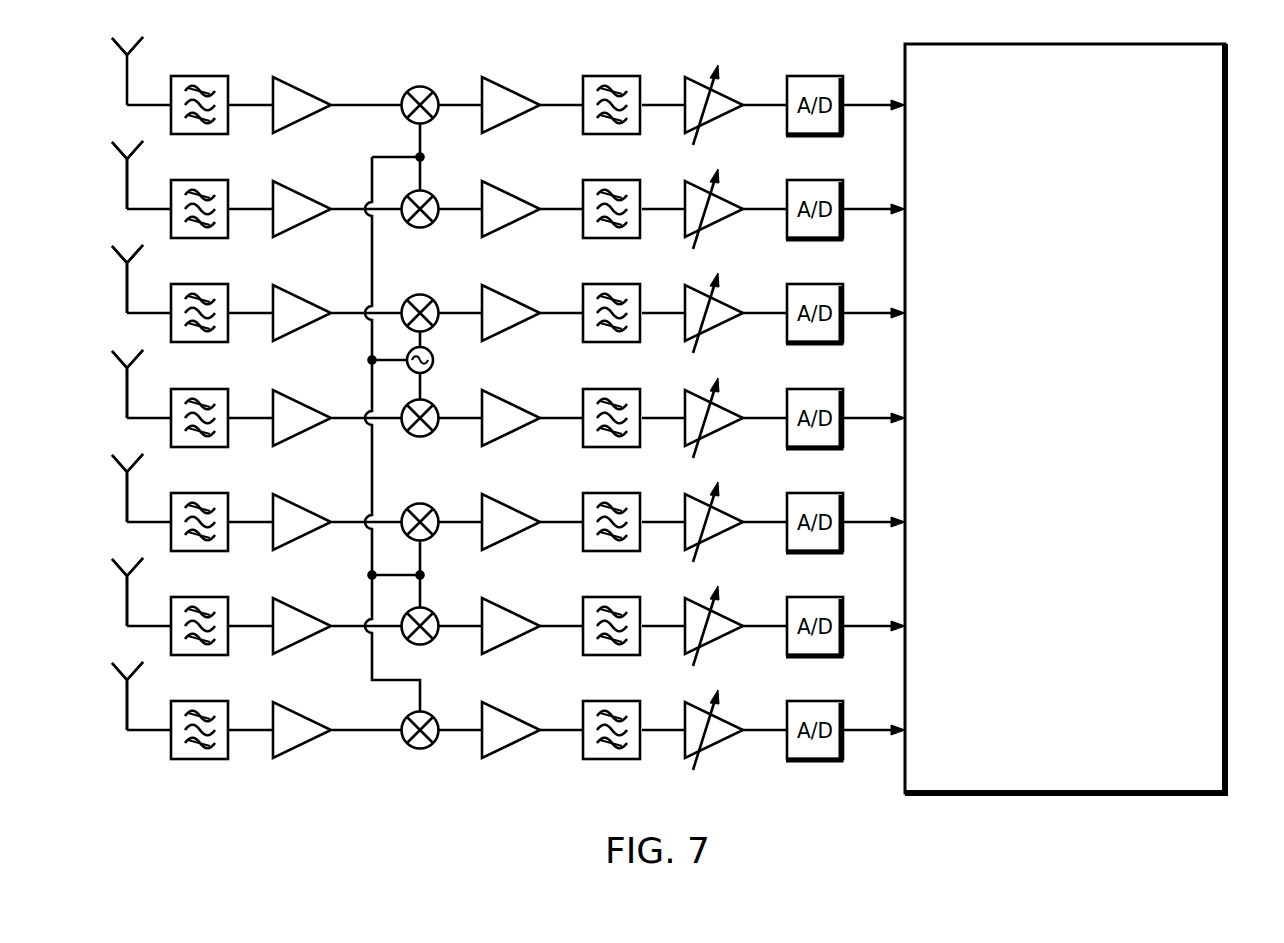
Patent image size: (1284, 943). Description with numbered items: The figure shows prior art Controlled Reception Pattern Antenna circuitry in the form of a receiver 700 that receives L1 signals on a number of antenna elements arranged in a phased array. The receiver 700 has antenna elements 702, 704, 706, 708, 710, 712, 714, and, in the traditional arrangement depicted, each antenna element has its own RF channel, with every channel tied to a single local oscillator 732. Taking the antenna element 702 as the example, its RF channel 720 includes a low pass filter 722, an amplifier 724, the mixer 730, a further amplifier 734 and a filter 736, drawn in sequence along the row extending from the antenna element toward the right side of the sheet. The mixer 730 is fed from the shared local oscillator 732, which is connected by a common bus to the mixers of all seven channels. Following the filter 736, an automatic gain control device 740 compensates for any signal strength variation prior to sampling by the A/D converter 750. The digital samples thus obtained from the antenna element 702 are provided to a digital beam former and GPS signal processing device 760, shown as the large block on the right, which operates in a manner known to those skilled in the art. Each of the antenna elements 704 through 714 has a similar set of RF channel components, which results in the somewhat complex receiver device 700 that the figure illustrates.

The receiver 700 is at (870, 826).
The antenna element 702 is at (114, 48).
The antenna element 704 is at (114, 152).
The antenna element 706 is at (114, 256).
The antenna element 708 is at (114, 361).
The antenna element 710 is at (114, 465).
The antenna element 712 is at (114, 569).
The antenna element 714 is at (114, 673).
The RF channel 720 is at (144, 42).
The low pass filter 722 is at (201, 76).
The amplifier 724 is at (286, 77).
The mixer 730 is at (420, 86).
The local oscillator 732 is at (434, 362).
The amplifier 734 is at (497, 77).
The filter 736 is at (610, 77).
The automatic gain control device 740 is at (697, 77).
The A/D converter 750 is at (815, 77).
The digital beam former and GPS signal processing device 760 is at (1228, 92).